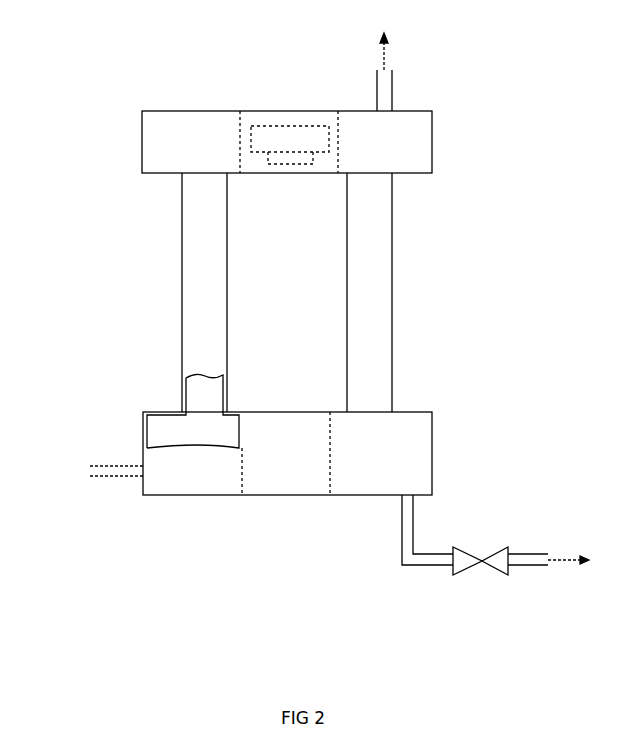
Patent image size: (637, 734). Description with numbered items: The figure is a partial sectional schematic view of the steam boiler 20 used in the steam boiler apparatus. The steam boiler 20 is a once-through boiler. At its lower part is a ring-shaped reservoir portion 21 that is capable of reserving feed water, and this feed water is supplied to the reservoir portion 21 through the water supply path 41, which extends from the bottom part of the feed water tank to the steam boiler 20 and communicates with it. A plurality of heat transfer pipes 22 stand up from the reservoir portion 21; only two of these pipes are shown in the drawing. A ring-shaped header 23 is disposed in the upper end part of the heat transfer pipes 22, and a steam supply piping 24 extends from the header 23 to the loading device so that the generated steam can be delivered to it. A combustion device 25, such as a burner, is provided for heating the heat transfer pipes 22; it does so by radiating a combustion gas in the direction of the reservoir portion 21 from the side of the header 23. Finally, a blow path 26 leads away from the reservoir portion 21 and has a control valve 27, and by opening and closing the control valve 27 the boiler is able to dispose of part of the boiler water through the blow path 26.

The steam boiler 20 is at (119, 91).
The reservoir portion 21 is at (200, 480).
The heat transfer pipes 22 is at (200, 303).
The header 23 is at (182, 128).
The steam supply piping 24 is at (393, 92).
The combustion device 25 is at (283, 135).
The blow path 26 is at (446, 568).
The control valve 27 is at (483, 547).
The water supply path 41 is at (122, 477).